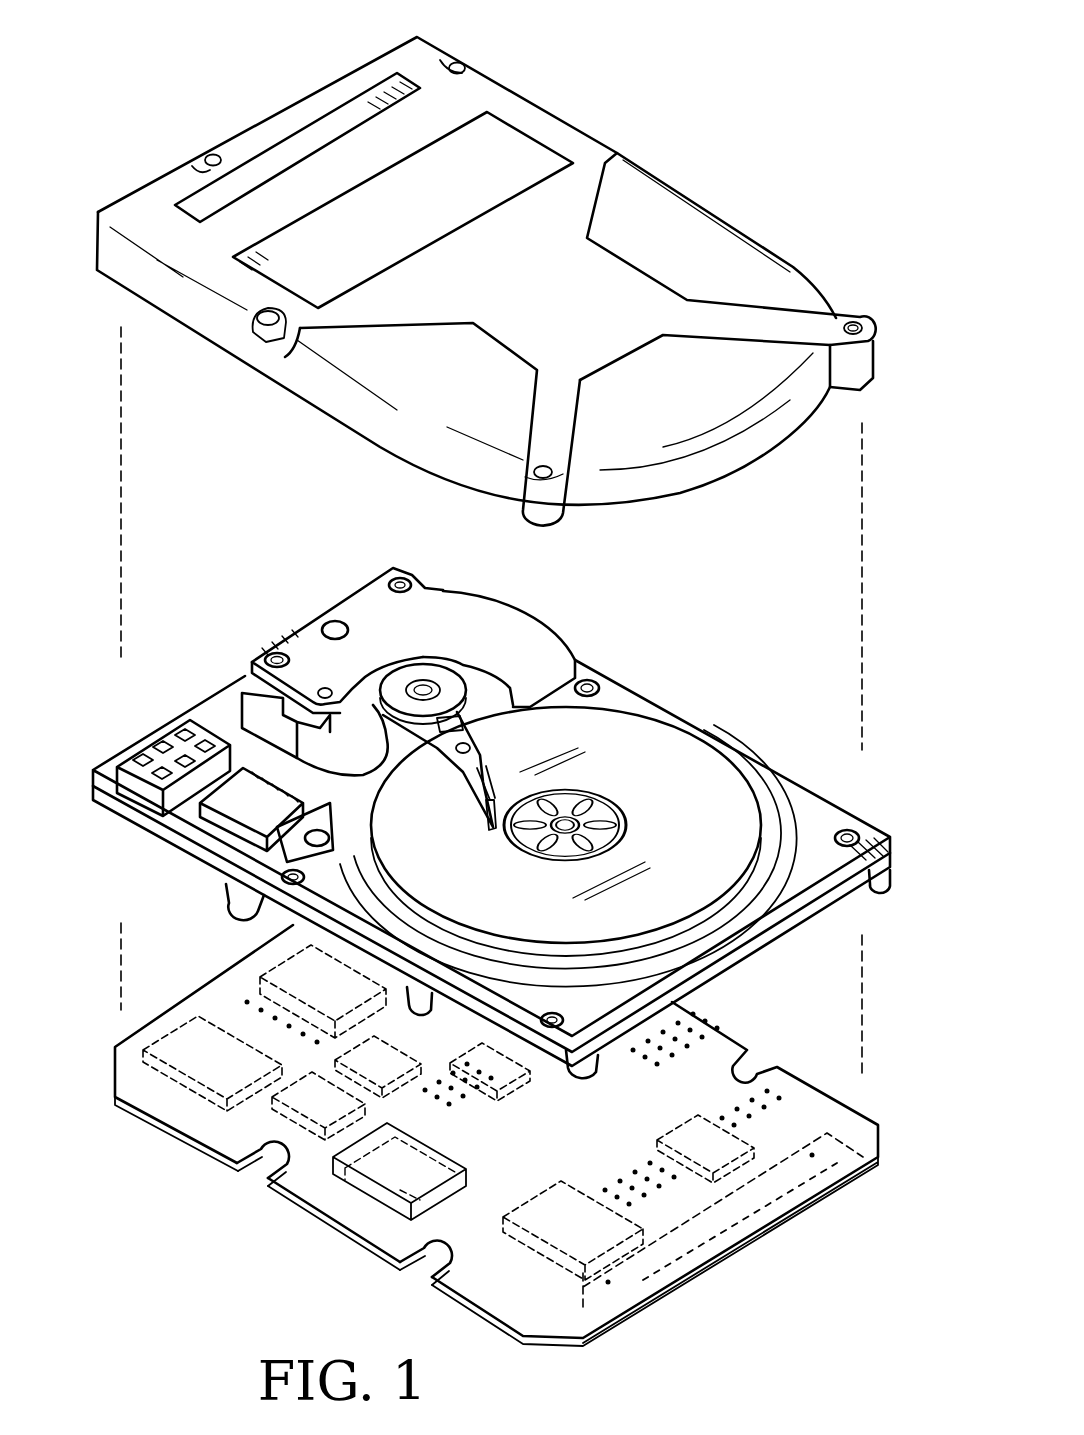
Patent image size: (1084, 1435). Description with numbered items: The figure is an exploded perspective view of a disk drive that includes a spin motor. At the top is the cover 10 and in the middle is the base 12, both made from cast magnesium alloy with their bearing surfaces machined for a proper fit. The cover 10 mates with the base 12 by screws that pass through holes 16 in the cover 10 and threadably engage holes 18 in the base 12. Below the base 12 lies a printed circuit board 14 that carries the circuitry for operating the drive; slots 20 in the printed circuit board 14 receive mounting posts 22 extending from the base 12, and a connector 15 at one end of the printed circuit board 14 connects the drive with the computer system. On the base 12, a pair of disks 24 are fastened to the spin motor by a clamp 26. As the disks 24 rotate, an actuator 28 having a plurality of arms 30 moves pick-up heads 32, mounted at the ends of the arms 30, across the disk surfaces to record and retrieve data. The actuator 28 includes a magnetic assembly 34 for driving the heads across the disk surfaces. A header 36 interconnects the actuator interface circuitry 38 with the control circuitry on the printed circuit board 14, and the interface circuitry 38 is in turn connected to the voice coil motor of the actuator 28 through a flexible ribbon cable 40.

The cover 10 is at (693, 202).
The base 12 is at (697, 727).
The printed circuit board 14 is at (549, 1120).
The connector 15 is at (743, 1253).
The holes 16 is at (460, 70).
The holes 18 is at (595, 672).
The slots 20 is at (263, 1165).
The mounting posts 22 is at (240, 915).
The disks 24 is at (498, 918).
The clamp 26 is at (603, 797).
The actuator 28 is at (508, 617).
The arms 30 is at (463, 793).
The pick-up heads 32 is at (493, 830).
The magnetic assembly 34 is at (417, 632).
The header 36 is at (157, 750).
The actuator interface circuitry 38 is at (190, 847).
The flexible ribbon cable 40 is at (354, 763).